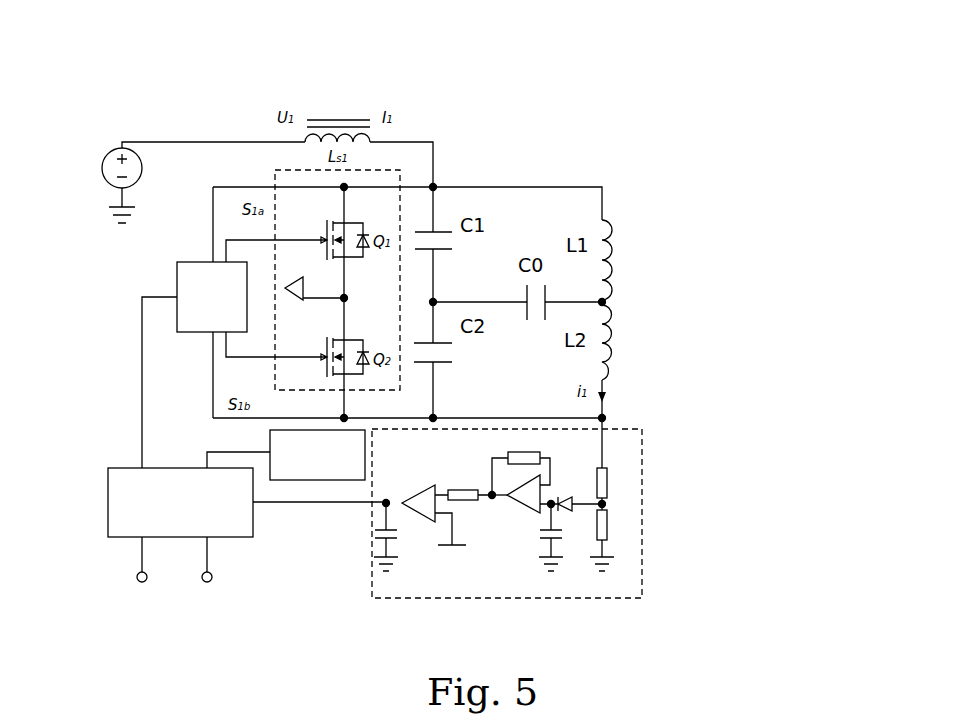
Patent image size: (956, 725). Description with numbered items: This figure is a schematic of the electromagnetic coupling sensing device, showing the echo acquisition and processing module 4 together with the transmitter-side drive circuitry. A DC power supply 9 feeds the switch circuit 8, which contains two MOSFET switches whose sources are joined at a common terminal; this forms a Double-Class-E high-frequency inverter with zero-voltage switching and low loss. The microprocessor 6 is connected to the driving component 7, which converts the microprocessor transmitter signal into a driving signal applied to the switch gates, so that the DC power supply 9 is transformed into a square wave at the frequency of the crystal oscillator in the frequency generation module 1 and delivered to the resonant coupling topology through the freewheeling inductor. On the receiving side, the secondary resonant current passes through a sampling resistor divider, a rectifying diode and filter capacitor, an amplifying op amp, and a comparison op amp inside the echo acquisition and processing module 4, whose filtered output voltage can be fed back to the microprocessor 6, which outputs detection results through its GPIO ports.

The DC power supply 9 is at (148, 160).
The switch circuit 8 is at (400, 170).
The driving component 7 is at (234, 327).
The frequency generation module 1 is at (286, 455).
The microprocessor 6 is at (245, 542).
The echo acquisition and processing module 4 is at (642, 513).